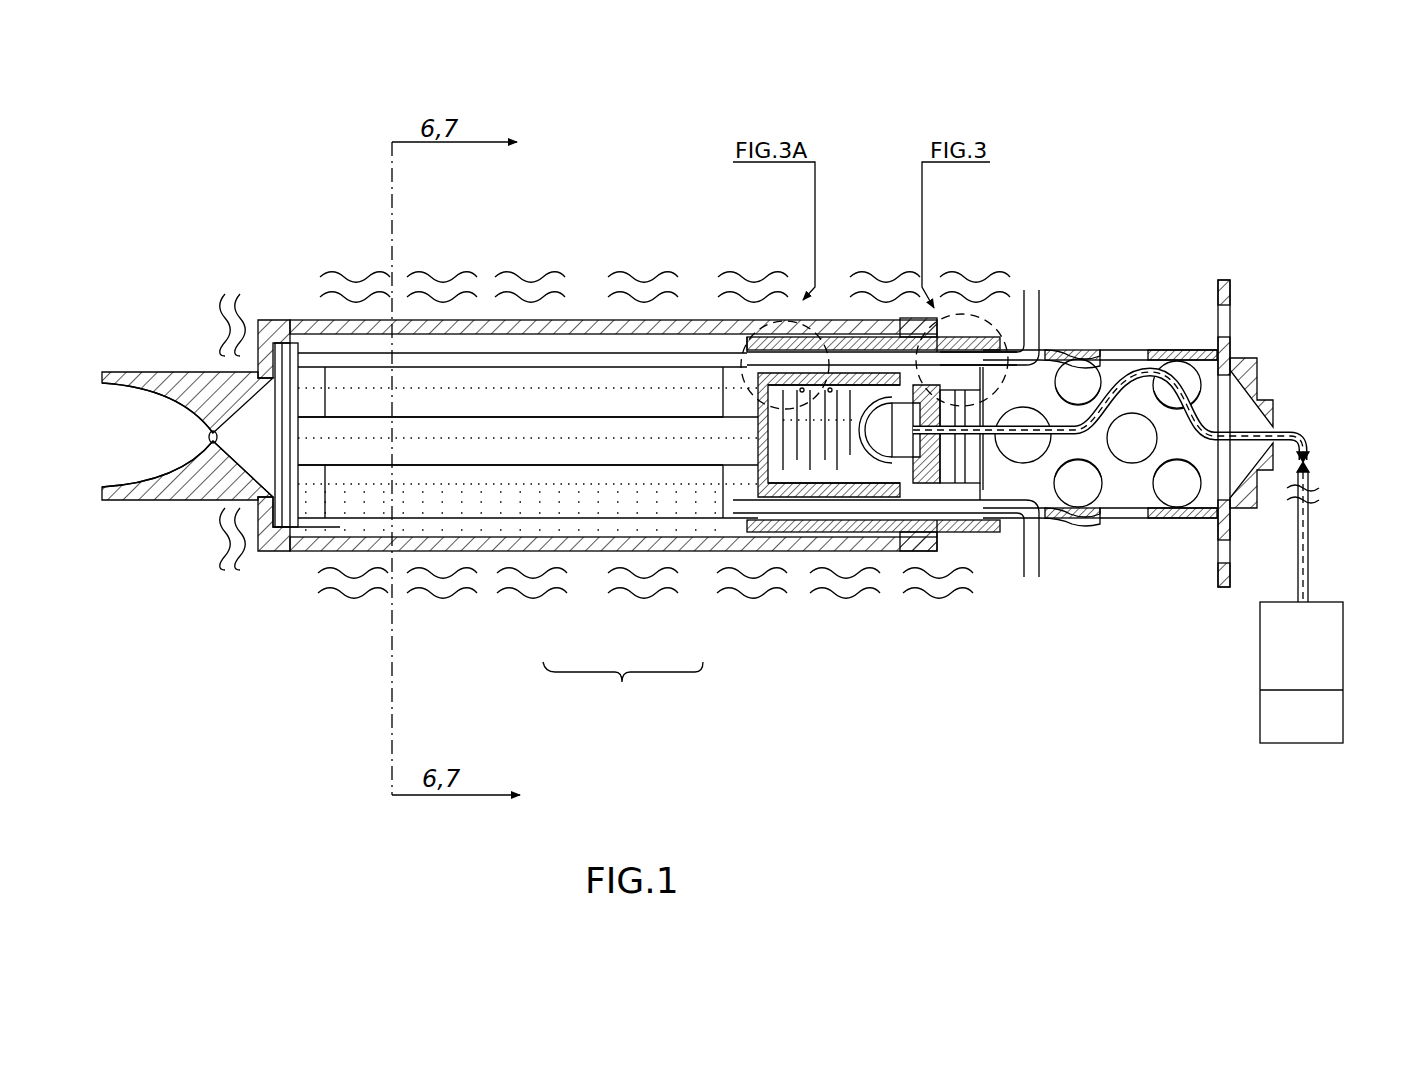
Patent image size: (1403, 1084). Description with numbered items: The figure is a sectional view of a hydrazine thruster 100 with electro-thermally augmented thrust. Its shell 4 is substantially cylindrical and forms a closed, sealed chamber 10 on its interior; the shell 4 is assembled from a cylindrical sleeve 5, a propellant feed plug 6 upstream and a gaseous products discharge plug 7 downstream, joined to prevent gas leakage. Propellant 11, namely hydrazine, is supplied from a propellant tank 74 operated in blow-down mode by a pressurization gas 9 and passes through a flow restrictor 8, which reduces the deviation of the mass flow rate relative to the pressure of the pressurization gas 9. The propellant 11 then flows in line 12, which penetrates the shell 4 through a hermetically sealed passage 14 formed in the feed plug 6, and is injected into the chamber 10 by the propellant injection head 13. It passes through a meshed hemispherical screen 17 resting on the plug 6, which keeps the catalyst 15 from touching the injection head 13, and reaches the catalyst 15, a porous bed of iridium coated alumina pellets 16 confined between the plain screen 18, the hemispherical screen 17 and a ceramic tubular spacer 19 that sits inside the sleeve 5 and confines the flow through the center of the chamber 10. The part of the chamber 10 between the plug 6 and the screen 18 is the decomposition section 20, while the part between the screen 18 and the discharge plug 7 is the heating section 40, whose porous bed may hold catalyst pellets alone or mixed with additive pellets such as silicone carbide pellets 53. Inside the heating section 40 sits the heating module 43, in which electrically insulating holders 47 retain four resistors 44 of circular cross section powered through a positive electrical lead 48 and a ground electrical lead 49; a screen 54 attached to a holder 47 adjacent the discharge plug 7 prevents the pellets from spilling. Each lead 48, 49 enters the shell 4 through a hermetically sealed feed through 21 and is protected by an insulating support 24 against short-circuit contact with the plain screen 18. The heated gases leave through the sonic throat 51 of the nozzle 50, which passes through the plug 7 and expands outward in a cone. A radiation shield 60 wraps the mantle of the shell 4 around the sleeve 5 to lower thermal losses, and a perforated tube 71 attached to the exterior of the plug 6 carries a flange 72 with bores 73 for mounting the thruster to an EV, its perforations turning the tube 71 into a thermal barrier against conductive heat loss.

The hydrazine thruster 100 is at (553, 97).
The shell 4 is at (532, 673).
The cylindrical sleeve 5 is at (580, 320).
The propellant feed plug 6 is at (880, 345).
The gaseous products discharge plug 7 is at (268, 319).
The flow restrictor 8 is at (1312, 460).
The pressurization gas 9 is at (1303, 713).
The chamber 10 is at (623, 692).
The propellant 11 is at (1323, 497).
The propellant line 12 is at (1308, 430).
The propellant injection head 13 is at (957, 363).
The hermetically sealed passage 14 is at (943, 540).
The catalyst 15 is at (797, 390).
The iridium coated alumina pellets 16 is at (830, 390).
The meshed hemispherical screen 17 is at (883, 470).
The plain screen 18 is at (702, 320).
The ceramic tubular spacer 19 is at (797, 532).
The decomposition section 20 is at (758, 480).
The feed through 21 is at (992, 540).
The insulating support 24 is at (797, 413).
The heating section 40 is at (647, 465).
The heating module 43 is at (373, 460).
The resistors 44 is at (613, 417).
The insulating holders 47 is at (226, 486).
The positive electrical lead 48 is at (1040, 320).
The ground electrical lead 49 is at (1040, 577).
The nozzle 50 is at (150, 468).
The sonic throat 51 is at (166, 381).
The silicone carbide pellets 53 is at (350, 527).
The screen 54 is at (205, 486).
The radiation shield 60 is at (650, 277).
The perforated tube 71 is at (1090, 520).
The flange 72 is at (1218, 342).
The bores 73 is at (1217, 553).
The propellant tank 74 is at (1260, 657).